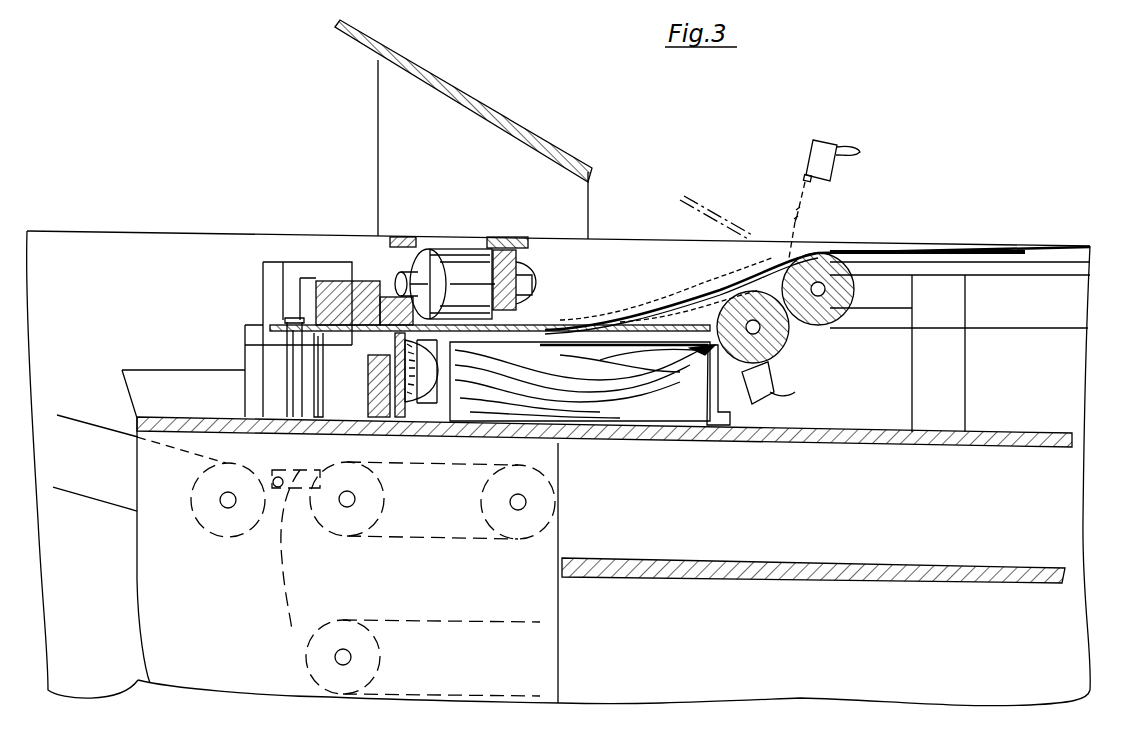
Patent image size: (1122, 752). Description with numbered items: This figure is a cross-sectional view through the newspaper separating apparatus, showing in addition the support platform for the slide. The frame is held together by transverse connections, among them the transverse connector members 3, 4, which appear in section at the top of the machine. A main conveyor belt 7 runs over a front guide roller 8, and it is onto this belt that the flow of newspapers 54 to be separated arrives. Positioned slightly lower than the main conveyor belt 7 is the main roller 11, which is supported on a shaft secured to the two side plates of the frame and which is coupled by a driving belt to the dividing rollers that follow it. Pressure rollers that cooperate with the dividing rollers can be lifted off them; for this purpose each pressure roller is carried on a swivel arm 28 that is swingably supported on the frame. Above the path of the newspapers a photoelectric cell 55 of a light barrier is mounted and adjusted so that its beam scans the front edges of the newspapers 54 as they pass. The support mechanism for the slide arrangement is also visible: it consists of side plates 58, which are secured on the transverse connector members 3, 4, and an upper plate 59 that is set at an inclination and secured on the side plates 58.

The transverse connector member 3 is at (398, 238).
The transverse connector member 4 is at (507, 237).
The main conveyor belt 7 is at (1022, 331).
The front guide roller 8 is at (832, 318).
The main roller 11 is at (773, 340).
The swivel arm 28 is at (462, 250).
The newspapers 54 is at (1000, 252).
The photoelectric cell 55 is at (822, 147).
The side plates 58 is at (441, 168).
The upper plate 59 is at (470, 105).